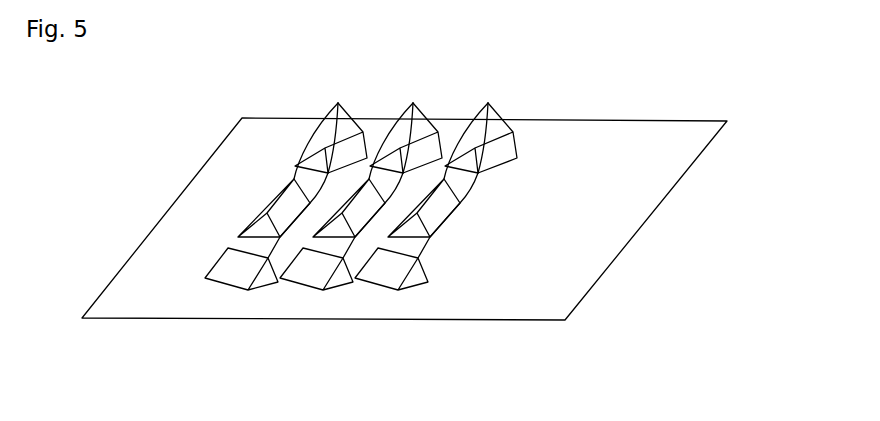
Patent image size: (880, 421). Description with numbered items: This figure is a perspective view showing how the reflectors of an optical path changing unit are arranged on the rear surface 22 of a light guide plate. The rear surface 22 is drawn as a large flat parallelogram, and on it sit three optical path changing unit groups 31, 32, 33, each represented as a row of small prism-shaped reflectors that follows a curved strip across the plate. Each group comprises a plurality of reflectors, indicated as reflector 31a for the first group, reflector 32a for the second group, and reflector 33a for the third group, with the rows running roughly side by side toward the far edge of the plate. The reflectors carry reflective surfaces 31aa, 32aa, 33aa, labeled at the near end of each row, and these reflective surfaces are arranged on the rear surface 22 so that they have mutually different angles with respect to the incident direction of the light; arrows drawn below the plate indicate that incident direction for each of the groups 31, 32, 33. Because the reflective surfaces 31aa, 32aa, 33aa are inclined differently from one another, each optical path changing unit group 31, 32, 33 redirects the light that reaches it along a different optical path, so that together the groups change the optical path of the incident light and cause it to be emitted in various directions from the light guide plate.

The rear surface 22 is at (590, 148).
The optical path changing unit group 31 is at (274, 235).
The reflector 31a is at (330, 130).
The reflective surface 31aa is at (231, 273).
The optical path changing unit group 32 is at (349, 235).
The reflector 32a is at (405, 130).
The reflective surface 32aa is at (304, 305).
The optical path changing unit group 33 is at (424, 235).
The reflector 33a is at (480, 130).
The reflective surface 33aa is at (379, 305).